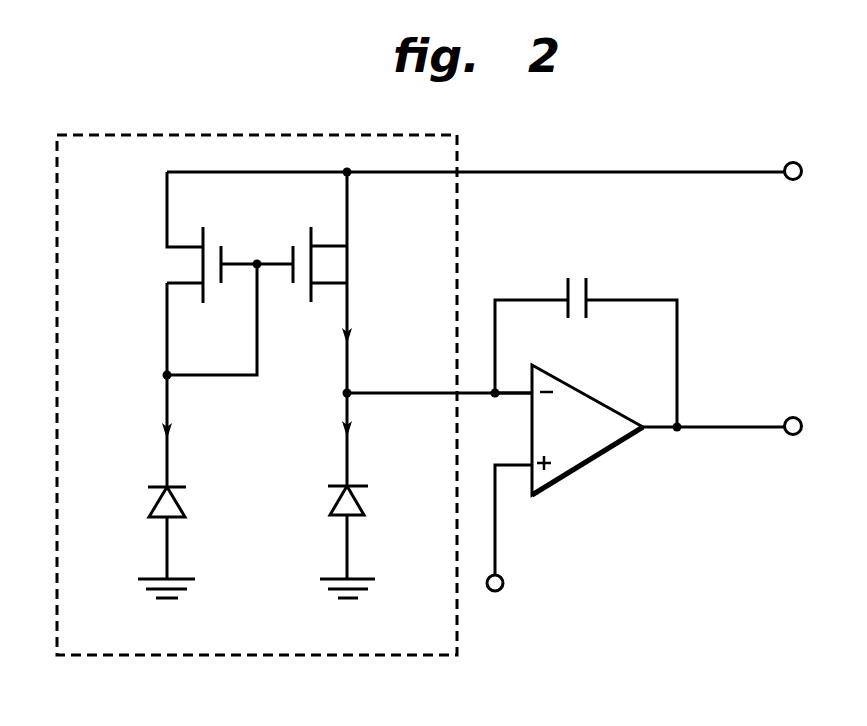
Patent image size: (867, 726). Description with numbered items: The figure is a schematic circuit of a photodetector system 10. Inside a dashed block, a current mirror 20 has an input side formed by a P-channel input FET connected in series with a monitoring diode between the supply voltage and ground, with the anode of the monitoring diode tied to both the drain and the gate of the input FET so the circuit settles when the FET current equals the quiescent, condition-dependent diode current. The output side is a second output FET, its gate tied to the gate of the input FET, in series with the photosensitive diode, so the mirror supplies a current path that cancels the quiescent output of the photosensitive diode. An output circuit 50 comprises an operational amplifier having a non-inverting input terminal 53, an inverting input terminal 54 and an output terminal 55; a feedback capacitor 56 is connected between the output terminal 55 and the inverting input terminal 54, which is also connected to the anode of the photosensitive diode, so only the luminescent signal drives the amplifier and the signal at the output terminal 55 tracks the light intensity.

The photodetector system 10 is at (70, 124).
The current mirror 20 is at (218, 134).
The output circuit 50 is at (481, 271).
The non-inverting input terminal 53 is at (521, 470).
The inverting input terminal 54 is at (521, 397).
The output terminal 55 is at (657, 432).
The feedback capacitor 56 is at (598, 291).